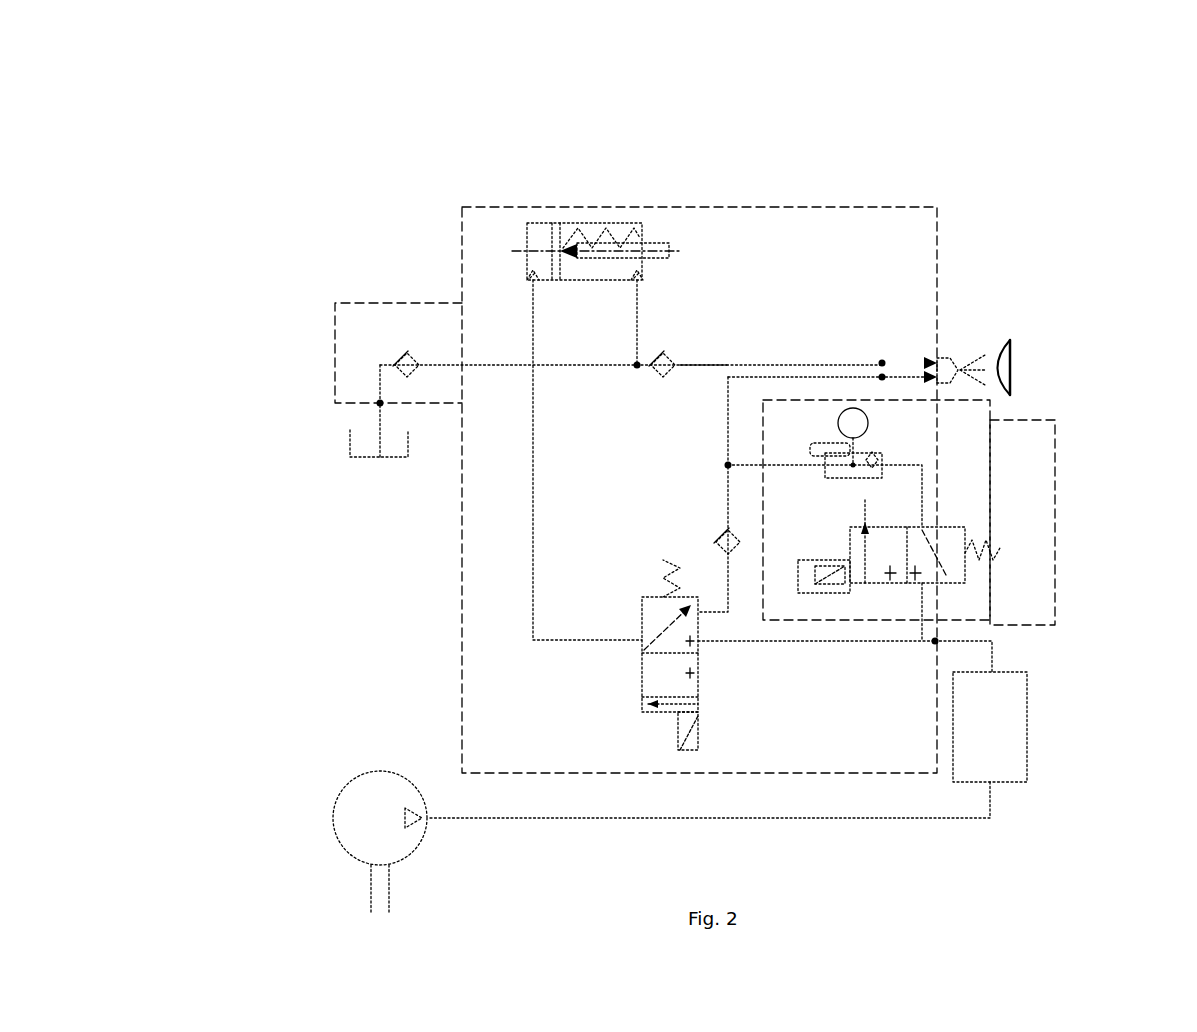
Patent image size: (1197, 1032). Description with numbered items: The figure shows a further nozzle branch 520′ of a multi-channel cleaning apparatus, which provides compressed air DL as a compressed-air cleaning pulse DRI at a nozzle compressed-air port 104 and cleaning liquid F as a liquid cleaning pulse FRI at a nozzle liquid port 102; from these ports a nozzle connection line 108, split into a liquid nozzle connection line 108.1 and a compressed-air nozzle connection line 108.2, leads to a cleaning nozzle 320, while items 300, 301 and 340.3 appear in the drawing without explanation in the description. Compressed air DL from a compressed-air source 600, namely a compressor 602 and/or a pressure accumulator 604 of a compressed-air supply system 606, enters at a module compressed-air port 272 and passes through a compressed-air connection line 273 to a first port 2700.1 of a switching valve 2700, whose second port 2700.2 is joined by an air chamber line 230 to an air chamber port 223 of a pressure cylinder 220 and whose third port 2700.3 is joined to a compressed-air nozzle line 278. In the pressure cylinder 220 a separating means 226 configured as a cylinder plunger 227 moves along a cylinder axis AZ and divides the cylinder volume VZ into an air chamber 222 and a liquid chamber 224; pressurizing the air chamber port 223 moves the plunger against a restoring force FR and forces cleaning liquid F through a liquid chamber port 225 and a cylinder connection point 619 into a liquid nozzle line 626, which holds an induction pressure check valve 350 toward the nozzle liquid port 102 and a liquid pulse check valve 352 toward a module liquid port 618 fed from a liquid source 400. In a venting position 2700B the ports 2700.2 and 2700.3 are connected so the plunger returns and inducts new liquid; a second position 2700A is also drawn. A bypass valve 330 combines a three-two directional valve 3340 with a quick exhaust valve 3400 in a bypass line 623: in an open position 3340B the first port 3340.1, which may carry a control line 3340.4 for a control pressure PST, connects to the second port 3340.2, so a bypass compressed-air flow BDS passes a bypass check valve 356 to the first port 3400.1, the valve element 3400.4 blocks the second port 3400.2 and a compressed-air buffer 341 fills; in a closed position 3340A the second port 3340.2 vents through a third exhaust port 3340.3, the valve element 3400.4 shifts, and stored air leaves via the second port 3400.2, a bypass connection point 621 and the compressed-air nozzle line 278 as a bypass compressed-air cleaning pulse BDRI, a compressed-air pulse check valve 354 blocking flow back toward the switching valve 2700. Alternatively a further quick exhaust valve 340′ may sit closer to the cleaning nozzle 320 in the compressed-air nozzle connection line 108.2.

The nozzle liquid port 102 is at (890, 377).
The nozzle compressed-air port 104 is at (880, 362).
The nozzle connection line 108 is at (918, 377).
The liquid nozzle connection line 108.1 is at (905, 355).
The compressed-air nozzle connection line 108.2 is at (915, 380).
The pressure cylinder 220 is at (585, 212).
The cylinder volume VZ is at (577, 172).
The air chamber 222 is at (528, 232).
The air chamber port 223 is at (528, 296).
The liquid chamber 224 is at (627, 232).
The liquid chamber port 225 is at (632, 296).
The separating means 226 is at (545, 232).
The cylinder plunger 227 is at (558, 137).
The cylinder axis AZ is at (677, 252).
The restoring force FR is at (565, 258).
The air chamber line 230 is at (533, 440).
The module compressed-air port 272 is at (937, 642).
The compressed-air connection line 273 is at (912, 642).
The compressed air DL is at (992, 657).
The compressed-air nozzle line 278 is at (742, 377).
The compressed-air cleaning pulse DRI is at (822, 331).
The bypass compressed-air cleaning pulse BDRI is at (822, 331).
The lens 300 is at (1008, 343).
The lens surface 301 is at (1015, 370).
The cleaning nozzle 320 is at (947, 358).
The bypass valve 330 is at (990, 408).
The alternative further quick exhaust valve 340′ is at (907, 380).
The line section 340.3 is at (848, 448).
The compressed-air buffer 341 is at (850, 407).
The induction pressure check valve 350 is at (667, 358).
The liquid pulse check valve 352 is at (397, 365).
The compressed-air pulse check valve 354 is at (735, 548).
The bypass check valve 356 is at (808, 468).
The liquid source 400 is at (365, 444).
The cleaning liquid F is at (316, 452).
The nozzle branch 520′ is at (862, 230).
The compressed-air source 600 is at (1020, 733).
The compressor 602 is at (332, 828).
The pressure accumulator 604 is at (802, 745).
The compressed-air supply system 606 is at (624, 849).
The module liquid port 618 is at (380, 403).
The cylinder connection point 619 is at (636, 368).
The bypass connection point 621 is at (726, 464).
The bypass line 623 is at (753, 455).
The liquid nozzle line 626 is at (717, 362).
The liquid cleaning pulse FRI is at (703, 311).
The switching valve 2700 is at (647, 552).
The first port 2700.1 is at (700, 641).
The second port 2700.2 is at (640, 641).
The third port 2700.3 is at (697, 613).
The actuator 2700A is at (655, 688).
The venting position 2700B is at (665, 613).
The 3/2 directional valve 3340 is at (922, 527).
The first port 3340.1 is at (857, 590).
The second port 3340.2 is at (893, 478).
The third exhaust port 3340.3 is at (948, 578).
The control line 3340.4 is at (836, 593).
The control pressure PST is at (816, 634).
The closed position 3340A is at (955, 519).
The open position 3340B is at (855, 538).
The quick exhaust valve 3400 is at (920, 430).
The bypass compressed-air flow BDS is at (853, 477).
The first port 3400.1 is at (877, 466).
The second port 3400.2 is at (828, 466).
The valve element 3400.4 is at (857, 541).